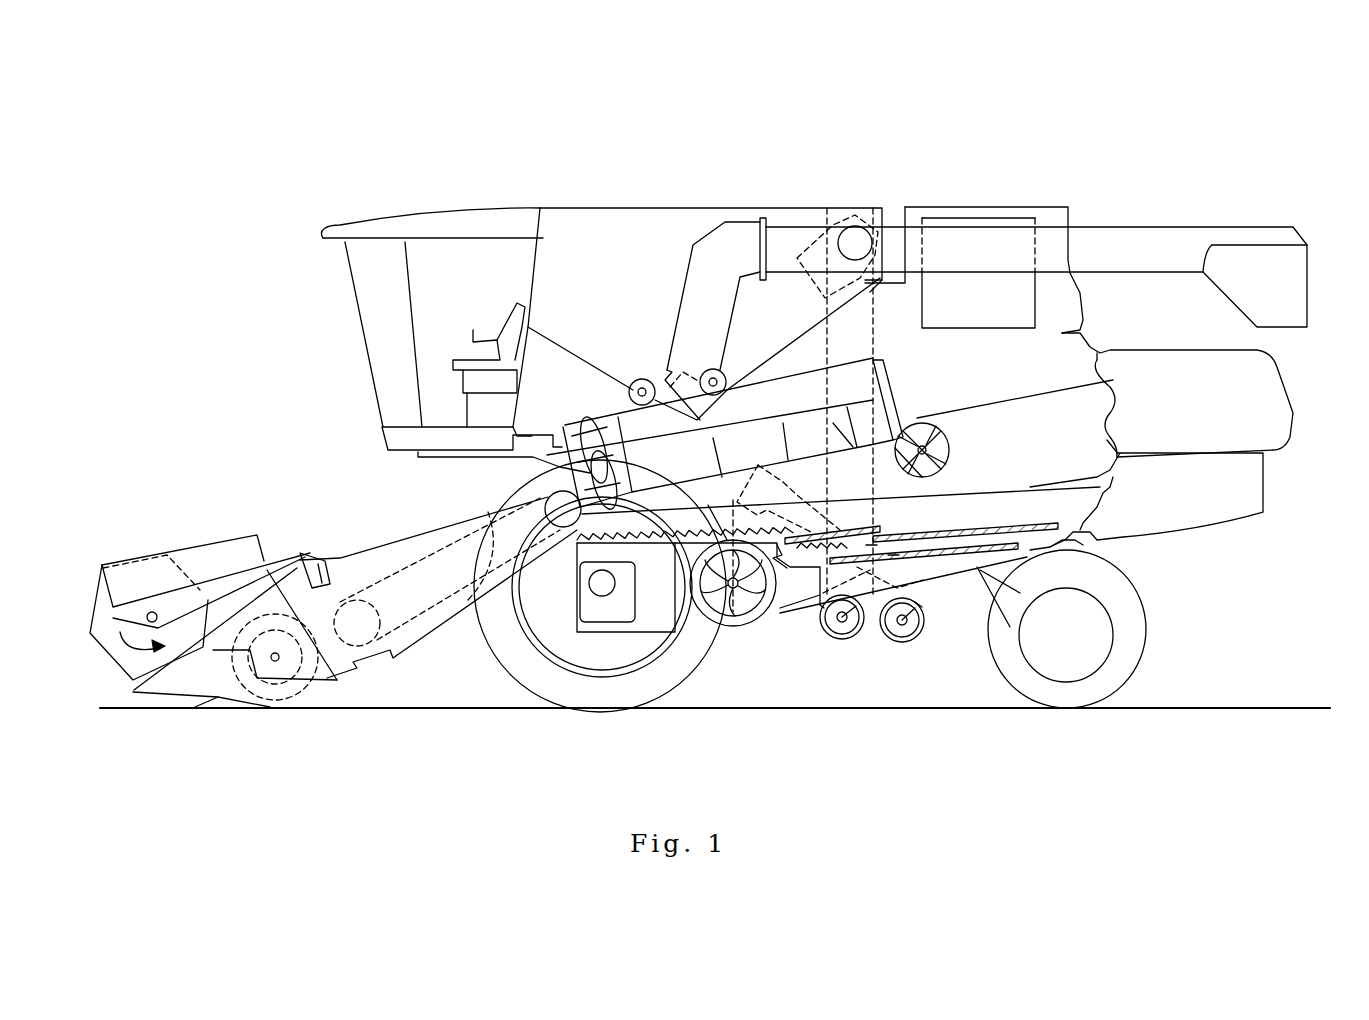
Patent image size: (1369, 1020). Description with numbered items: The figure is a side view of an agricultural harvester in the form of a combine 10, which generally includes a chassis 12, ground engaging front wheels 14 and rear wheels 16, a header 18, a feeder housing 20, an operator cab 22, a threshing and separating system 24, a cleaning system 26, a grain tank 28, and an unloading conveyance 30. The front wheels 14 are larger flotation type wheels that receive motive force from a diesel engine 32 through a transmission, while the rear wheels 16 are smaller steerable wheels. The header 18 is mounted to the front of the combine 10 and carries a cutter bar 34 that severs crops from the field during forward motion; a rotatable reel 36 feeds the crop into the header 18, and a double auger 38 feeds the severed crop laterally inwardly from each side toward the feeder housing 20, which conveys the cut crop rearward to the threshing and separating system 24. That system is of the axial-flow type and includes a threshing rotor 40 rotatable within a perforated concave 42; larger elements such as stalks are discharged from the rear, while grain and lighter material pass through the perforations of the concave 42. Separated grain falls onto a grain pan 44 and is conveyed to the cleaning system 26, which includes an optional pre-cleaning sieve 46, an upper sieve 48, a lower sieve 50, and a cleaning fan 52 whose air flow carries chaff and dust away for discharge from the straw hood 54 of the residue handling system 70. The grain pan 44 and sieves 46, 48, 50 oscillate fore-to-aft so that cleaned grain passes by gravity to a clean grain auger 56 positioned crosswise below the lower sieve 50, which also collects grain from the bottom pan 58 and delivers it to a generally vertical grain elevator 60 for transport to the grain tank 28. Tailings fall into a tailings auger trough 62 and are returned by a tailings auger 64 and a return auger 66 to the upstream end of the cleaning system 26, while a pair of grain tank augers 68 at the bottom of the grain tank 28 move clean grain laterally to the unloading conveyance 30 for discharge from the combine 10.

The combine 10 is at (418, 190).
The chassis 12 is at (1083, 540).
The front wheels 14 is at (507, 665).
The rear wheels 16 is at (1142, 648).
The header 18 is at (187, 533).
The feeder housing 20 is at (398, 537).
The operator cab 22 is at (360, 312).
The threshing and separating system 24 is at (508, 472).
The cleaning system 26 is at (793, 643).
The grain tank 28 is at (593, 213).
The unloading conveyance 30 is at (1162, 233).
The diesel engine 32 is at (968, 220).
The cutter bar 34 is at (200, 707).
The reel 36 is at (100, 618).
The double auger 38 is at (275, 680).
The threshing rotor 40 is at (590, 435).
The perforated concave 42 is at (763, 440).
The grain pan 44 is at (583, 543).
The pre-cleaning sieve 46 is at (880, 528).
The upper sieve 48 is at (978, 533).
The lower sieve 50 is at (952, 560).
The cleaning fan 52 is at (727, 620).
The straw hood 54 is at (1270, 390).
The clean grain auger 56 is at (852, 627).
The bottom pan 58 is at (1020, 593).
The grain elevator 60 is at (877, 337).
The tailings auger trough 62 is at (1010, 627).
The tailings auger 64 is at (902, 633).
The return auger 66 is at (817, 523).
The grain tank augers 68 is at (642, 378).
The residue handling system 70 is at (1230, 525).